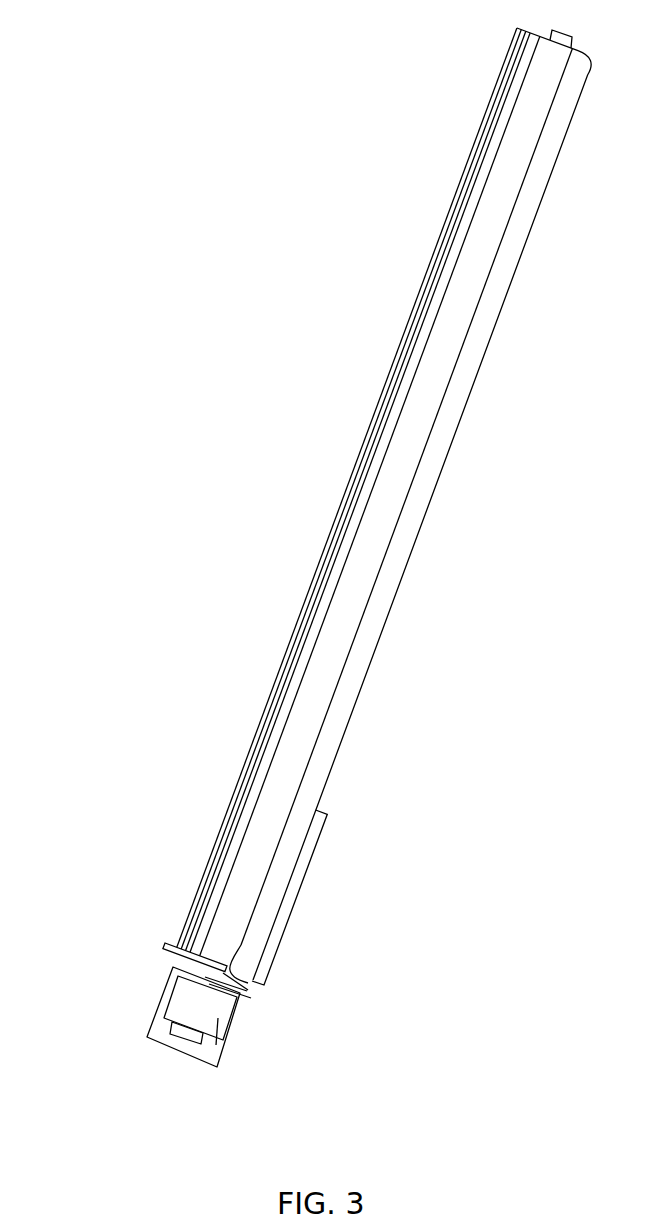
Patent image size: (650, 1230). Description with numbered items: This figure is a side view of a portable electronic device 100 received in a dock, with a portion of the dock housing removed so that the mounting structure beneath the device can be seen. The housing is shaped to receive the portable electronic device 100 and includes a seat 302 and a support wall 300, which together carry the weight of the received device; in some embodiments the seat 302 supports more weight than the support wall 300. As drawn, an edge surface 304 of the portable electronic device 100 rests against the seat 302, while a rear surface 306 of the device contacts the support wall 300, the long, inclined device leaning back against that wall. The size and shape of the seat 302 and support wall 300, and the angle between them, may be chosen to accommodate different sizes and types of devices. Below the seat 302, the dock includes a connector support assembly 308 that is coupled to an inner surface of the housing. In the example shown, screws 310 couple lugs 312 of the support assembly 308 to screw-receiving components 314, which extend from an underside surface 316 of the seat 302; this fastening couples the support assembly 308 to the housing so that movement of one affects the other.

The portable electronic device 100 is at (462, 162).
The support wall 300 is at (303, 833).
The seat 302 is at (192, 928).
The edge surface 304 is at (252, 988).
The rear surface 306 is at (286, 862).
The connector support assembly 308 is at (147, 1010).
The screws 310 is at (193, 1037).
The lugs 312 is at (216, 1045).
The screw-receiving components 314 is at (249, 997).
The underside surface 316 is at (163, 950).